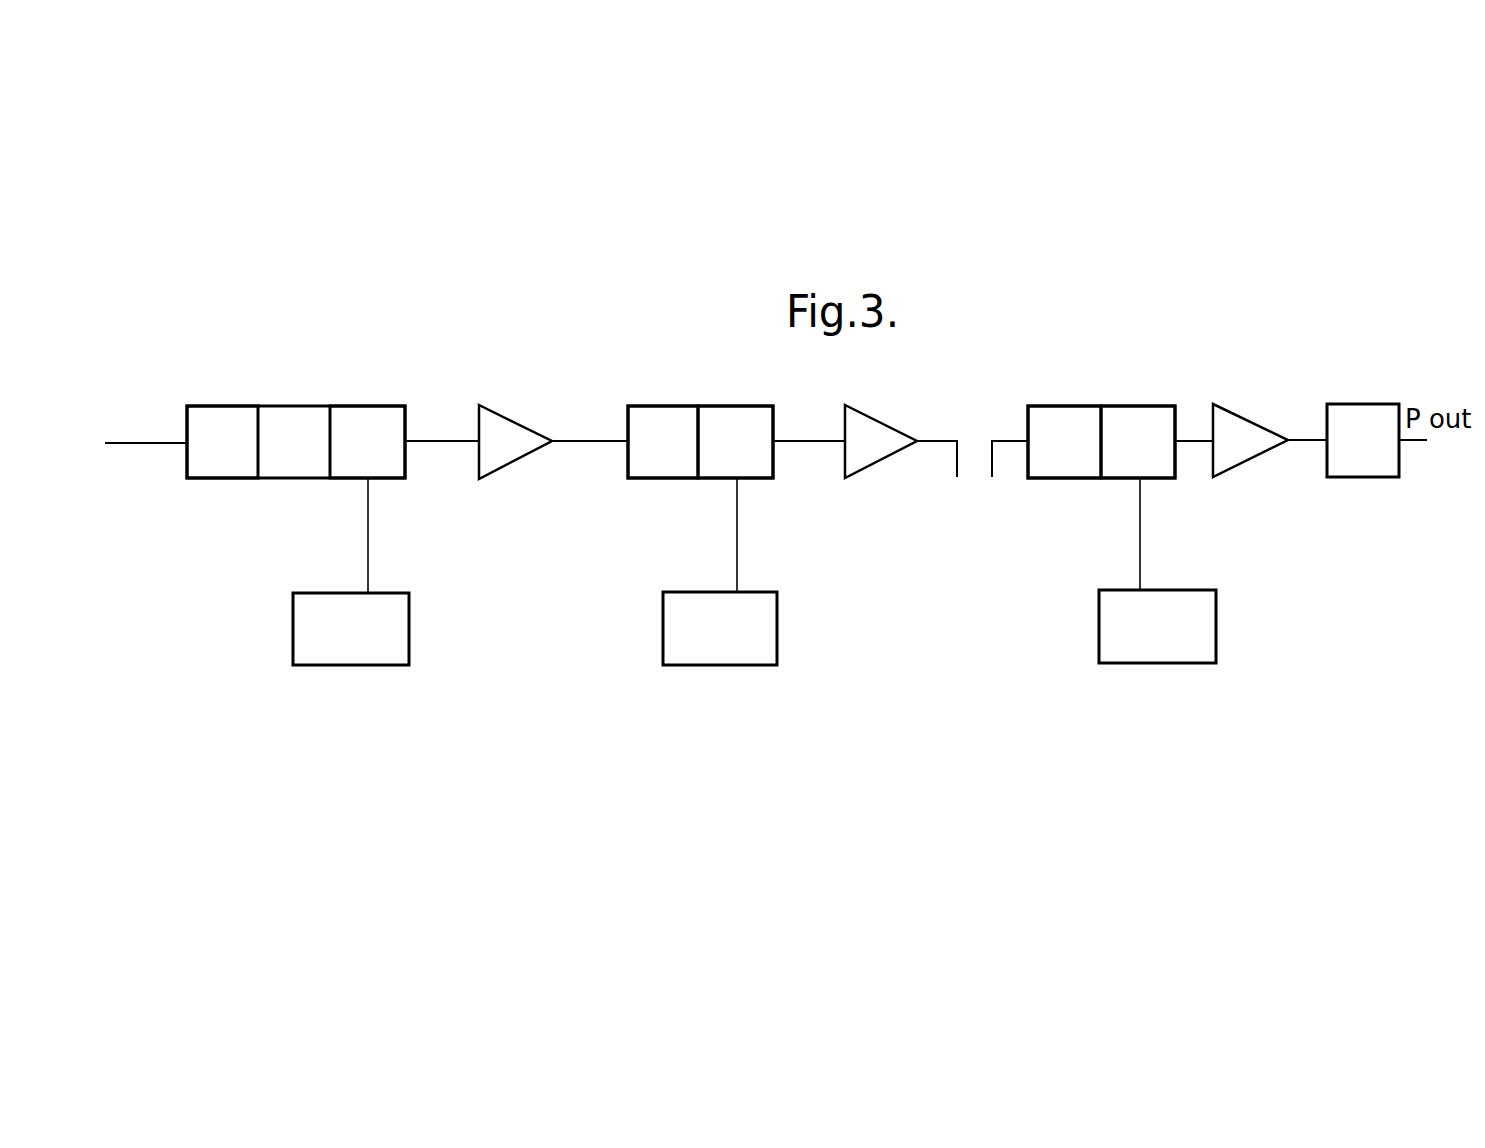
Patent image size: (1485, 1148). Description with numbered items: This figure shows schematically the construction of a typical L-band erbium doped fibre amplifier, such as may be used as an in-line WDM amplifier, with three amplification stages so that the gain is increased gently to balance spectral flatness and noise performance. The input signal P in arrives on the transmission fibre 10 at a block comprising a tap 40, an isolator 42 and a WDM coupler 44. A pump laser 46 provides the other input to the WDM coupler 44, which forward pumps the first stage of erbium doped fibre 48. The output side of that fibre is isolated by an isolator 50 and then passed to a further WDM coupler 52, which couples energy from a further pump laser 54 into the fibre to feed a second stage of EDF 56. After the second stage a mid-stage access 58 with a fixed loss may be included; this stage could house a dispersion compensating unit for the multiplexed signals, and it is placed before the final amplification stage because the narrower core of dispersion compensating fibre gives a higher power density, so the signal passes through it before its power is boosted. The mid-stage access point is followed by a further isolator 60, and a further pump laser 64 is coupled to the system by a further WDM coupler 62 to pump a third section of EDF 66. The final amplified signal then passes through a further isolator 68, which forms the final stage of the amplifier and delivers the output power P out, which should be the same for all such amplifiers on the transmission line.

The transmission fibre 10 is at (155, 443).
The tap 40 is at (219, 405).
The isolator 42 is at (297, 405).
The WDM coupler 44 is at (372, 405).
The pump laser 46 is at (352, 665).
The first stage of erbium doped fibre 48 is at (527, 458).
The isolator 50 is at (663, 405).
The WDM coupler 52 is at (733, 405).
The pump laser 54 is at (728, 665).
The second stage of EDF 56 is at (877, 418).
The mid-stage access 58 is at (977, 481).
The isolator 60 is at (1060, 405).
The WDM coupler 62 is at (1137, 405).
The pump laser 64 is at (1157, 663).
The third section of EDF 66 is at (1253, 461).
The isolator 68 is at (1365, 478).